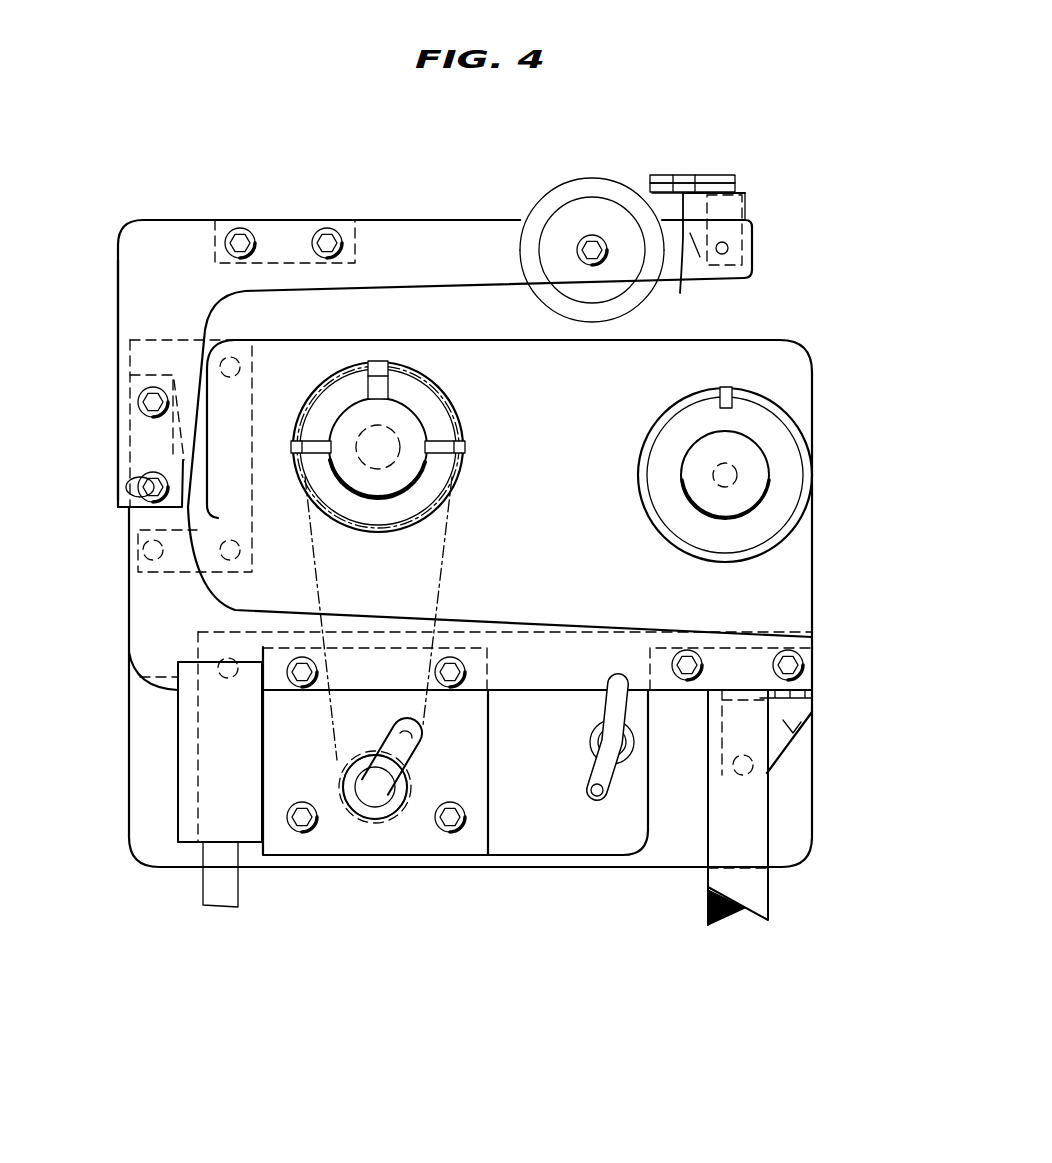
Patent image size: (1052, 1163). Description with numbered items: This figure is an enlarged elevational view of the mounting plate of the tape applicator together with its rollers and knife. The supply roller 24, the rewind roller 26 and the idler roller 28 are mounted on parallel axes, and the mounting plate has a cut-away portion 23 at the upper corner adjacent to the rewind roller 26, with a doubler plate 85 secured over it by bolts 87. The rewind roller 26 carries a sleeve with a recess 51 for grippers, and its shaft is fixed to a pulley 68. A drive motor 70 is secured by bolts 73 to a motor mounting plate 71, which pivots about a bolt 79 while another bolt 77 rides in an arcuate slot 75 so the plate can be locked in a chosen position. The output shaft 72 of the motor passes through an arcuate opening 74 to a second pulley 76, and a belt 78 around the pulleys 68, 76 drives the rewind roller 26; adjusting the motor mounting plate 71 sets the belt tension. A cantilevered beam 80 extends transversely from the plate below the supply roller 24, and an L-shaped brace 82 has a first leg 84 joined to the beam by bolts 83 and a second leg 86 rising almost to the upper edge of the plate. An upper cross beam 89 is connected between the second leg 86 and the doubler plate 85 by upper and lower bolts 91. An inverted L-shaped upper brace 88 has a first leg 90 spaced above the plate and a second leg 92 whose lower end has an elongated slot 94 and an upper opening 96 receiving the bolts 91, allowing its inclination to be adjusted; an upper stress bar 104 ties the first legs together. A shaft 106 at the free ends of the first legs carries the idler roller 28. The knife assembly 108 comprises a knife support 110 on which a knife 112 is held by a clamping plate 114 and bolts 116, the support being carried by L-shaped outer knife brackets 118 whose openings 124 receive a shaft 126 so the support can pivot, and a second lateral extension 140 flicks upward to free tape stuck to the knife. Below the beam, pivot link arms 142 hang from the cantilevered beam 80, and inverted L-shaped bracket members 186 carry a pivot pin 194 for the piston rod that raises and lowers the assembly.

The cut-away portion 23 is at (203, 368).
The supply roller 24 is at (635, 474).
The rewind roller 26 is at (458, 390).
The idler roller 28 is at (594, 176).
The recess 51 is at (380, 362).
The pulley 68 is at (452, 417).
The drive motor 70 is at (490, 778).
The motor mounting plate 71 is at (547, 850).
The output shaft 72 is at (351, 838).
The bolts 73 is at (303, 834).
The arcuate opening 74 is at (395, 733).
The arcuate slot 75 is at (600, 800).
The second pulley 76 is at (390, 820).
The bolt 77 is at (632, 738).
The belt 78 is at (443, 560).
The bolt 79 is at (125, 688).
The cantilevered beam 80 is at (665, 636).
The L-shaped brace 82 is at (150, 614).
The bolts 83 is at (772, 662).
The first leg 84 is at (534, 680).
The doubler plate 85 is at (268, 360).
The second leg 86 is at (135, 588).
The bolts 87 is at (235, 541).
The inverted L-shaped upper brace 88 is at (397, 218).
The upper cross beam 89 is at (200, 442).
The first leg 90 is at (455, 232).
The bolts 91 is at (147, 402).
The second leg 92 is at (125, 300).
The lower elongated slot 94 is at (128, 488).
The upper opening 96 is at (150, 390).
The upper stress bar 104 is at (214, 248).
The shaft 106 is at (585, 242).
The knife assembly 108 is at (775, 150).
The knife support 110 is at (745, 191).
The knife 112 is at (636, 182).
The clamping plate 114 is at (722, 178).
The bolts 116 is at (688, 177).
The L-shaped outer knife bracket 118 is at (748, 214).
The opening 124 is at (730, 248).
The shaft 126 is at (727, 254).
The second lateral extension 140 is at (683, 258).
The pivot link arm 142 is at (752, 897).
The inverted L-shaped bracket member 186 is at (812, 712).
The pivot pin 194 is at (747, 772).